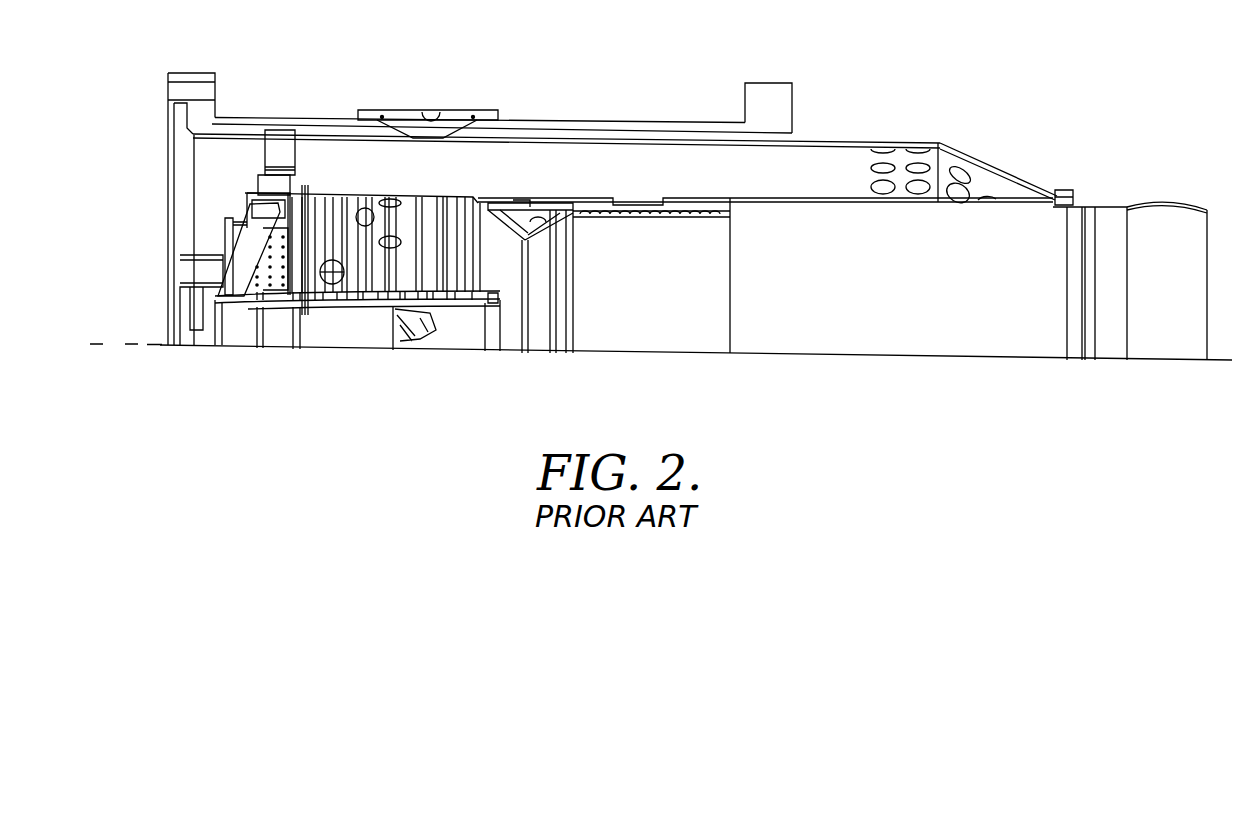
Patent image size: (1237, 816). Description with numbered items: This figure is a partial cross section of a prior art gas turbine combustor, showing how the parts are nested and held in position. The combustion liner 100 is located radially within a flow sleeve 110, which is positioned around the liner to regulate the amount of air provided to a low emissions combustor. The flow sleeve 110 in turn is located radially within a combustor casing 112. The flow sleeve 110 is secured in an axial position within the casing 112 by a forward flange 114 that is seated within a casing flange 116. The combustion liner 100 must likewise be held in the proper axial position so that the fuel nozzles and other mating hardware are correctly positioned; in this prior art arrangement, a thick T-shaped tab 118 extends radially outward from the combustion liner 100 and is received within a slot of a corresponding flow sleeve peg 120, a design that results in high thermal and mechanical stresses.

The combustion liner 100 is at (1098, 207).
The flow sleeve 110 is at (833, 143).
The combustor casing 112 is at (743, 110).
The forward flange 114 is at (182, 122).
The casing flange 116 is at (199, 73).
The T-shaped tab 118 is at (270, 187).
The flow sleeve peg 120 is at (282, 143).